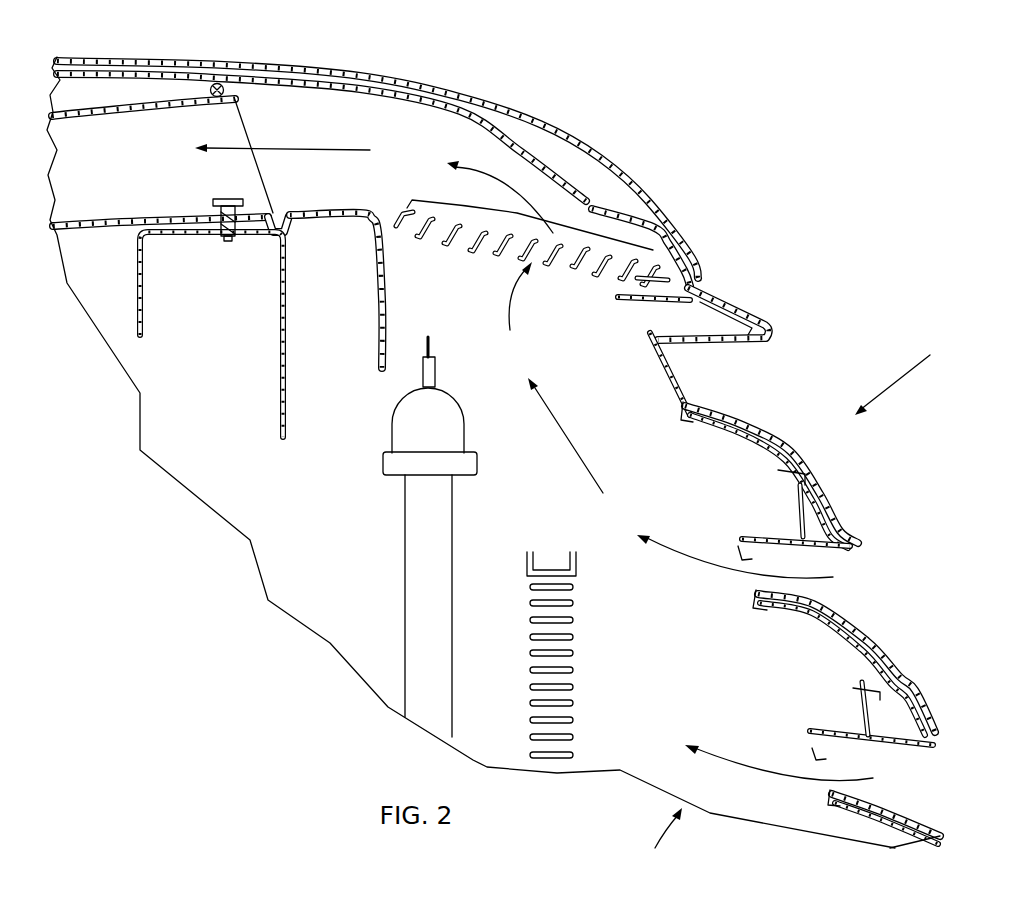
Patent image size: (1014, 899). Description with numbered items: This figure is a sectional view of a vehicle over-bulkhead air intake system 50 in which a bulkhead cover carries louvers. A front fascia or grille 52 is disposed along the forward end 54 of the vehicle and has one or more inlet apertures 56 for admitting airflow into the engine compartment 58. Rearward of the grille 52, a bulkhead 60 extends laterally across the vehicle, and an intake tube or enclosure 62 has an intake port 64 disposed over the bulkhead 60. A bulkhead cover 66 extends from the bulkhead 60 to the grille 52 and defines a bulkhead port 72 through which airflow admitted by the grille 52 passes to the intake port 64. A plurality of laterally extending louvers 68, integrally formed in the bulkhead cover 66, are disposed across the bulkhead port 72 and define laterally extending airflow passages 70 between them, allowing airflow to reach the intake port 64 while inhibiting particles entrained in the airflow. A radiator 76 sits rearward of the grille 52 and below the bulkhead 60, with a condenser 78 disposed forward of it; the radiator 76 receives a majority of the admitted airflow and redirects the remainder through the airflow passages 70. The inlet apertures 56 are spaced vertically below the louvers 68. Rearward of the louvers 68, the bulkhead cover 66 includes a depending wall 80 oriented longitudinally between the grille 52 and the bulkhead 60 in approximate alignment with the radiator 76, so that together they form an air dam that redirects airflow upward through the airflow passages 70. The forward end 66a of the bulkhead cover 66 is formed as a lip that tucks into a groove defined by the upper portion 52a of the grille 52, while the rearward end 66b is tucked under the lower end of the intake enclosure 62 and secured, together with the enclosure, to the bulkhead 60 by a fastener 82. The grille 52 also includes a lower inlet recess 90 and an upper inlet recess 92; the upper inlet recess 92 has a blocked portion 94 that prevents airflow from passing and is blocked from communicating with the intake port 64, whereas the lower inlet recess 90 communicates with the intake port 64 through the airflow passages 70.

The air intake system 50 is at (648, 835).
The grille 52 is at (892, 382).
The upper portion of the grille 52a is at (692, 307).
The forward end of the vehicle 54 is at (640, 183).
The inlet apertures 56 is at (693, 393).
The engine compartment 58 is at (632, 700).
The bulkhead 60 is at (287, 390).
The intake enclosure 62 is at (143, 100).
The intake port 64 is at (240, 130).
The bulkhead cover 66 is at (367, 193).
The forward end of the bulkhead cover 66a is at (703, 283).
The rearward end of the bulkhead cover 66b is at (257, 233).
The louvers 68 is at (510, 246).
The airflow passages 70 is at (585, 263).
The bulkhead port 72 is at (549, 247).
The radiator 76 is at (418, 580).
The condenser 78 is at (563, 637).
The depending wall 80 is at (377, 313).
The fastener 82 is at (223, 233).
The lower inlet recess 90 is at (830, 562).
The upper inlet recess 92 is at (735, 365).
The blocked portion 94 is at (663, 380).